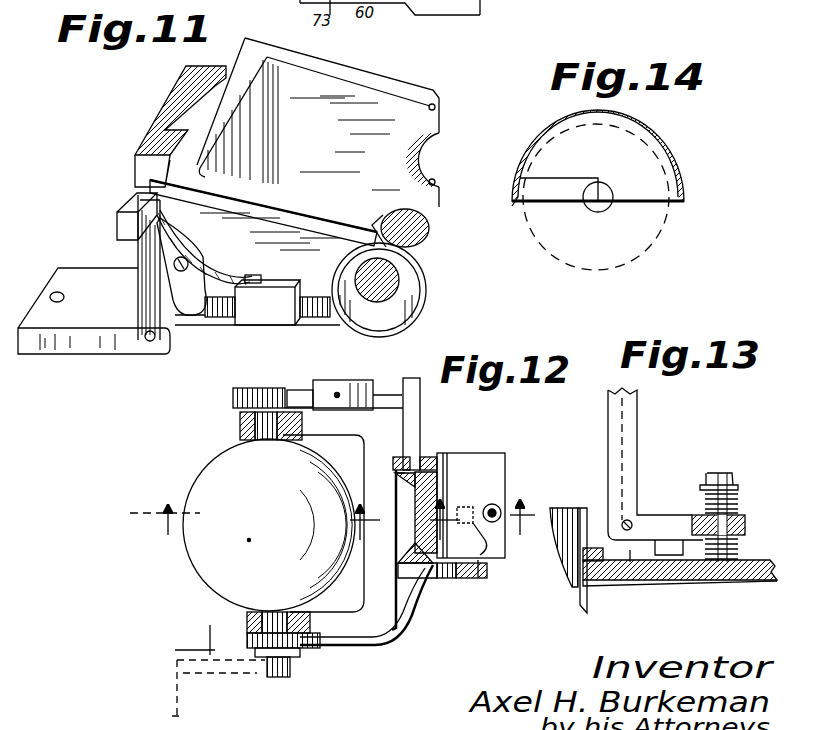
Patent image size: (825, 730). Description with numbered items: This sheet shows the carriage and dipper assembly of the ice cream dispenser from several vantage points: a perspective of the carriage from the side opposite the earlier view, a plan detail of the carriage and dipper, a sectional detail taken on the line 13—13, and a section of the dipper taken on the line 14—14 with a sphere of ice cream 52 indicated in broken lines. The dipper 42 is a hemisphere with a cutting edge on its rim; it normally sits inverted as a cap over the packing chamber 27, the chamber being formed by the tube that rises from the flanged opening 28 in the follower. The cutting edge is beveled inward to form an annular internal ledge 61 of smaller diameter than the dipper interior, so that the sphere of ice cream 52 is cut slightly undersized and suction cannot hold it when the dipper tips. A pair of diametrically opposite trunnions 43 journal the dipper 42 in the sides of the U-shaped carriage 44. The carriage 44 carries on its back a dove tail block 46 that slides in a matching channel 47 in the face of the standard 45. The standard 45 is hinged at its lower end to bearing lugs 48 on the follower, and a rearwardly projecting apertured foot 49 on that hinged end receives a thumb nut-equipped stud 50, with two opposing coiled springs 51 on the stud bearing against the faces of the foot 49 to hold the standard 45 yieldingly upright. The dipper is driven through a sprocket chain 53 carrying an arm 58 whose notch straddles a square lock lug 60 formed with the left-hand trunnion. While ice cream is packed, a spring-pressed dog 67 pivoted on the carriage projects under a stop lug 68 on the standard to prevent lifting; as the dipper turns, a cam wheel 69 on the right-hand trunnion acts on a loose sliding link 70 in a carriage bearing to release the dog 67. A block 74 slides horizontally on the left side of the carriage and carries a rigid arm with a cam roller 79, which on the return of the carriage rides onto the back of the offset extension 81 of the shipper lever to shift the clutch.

In FIG. 12, the section line 13— 13 is at (471, 519).
In FIG. 12, the section line 14— 14 is at (252, 518).
In FIG. 13, the packing chamber 27 is at (572, 556).
In FIG. 13, the flanged opening 28 is at (578, 592).
In FIG. 14, the dipper 42 is at (666, 142).
In FIG. 12, the dipper 42 is at (218, 478).
In FIG. 11, the trunnions 43 is at (422, 228).
In FIG. 12, the trunnions 43 is at (258, 425).
In FIG. 11, the carriage 44 is at (345, 78).
In FIG. 12, the carriage 44 is at (352, 618).
In FIG. 11, the standard 45 is at (140, 146).
In FIG. 12, the standard 45 is at (440, 583).
In FIG. 13, the standard 45 is at (634, 465).
In FIG. 11, the dove tail block 46 is at (196, 100).
In FIG. 12, the dove tail block 46 is at (428, 478).
In FIG. 11, the channel 47 is at (252, 118).
In FIG. 12, the channel 47 is at (398, 557).
In FIG. 13, the channel 47 is at (616, 440).
In FIG. 12, the bearing lugs 48 is at (470, 490).
In FIG. 13, the bearing lugs 48 is at (622, 587).
In FIG. 11, the foot 49 is at (85, 345).
In FIG. 12, the foot 49 is at (455, 470).
In FIG. 13, the foot 49 is at (655, 533).
In FIG. 12, the stud 50 is at (500, 502).
In FIG. 13, the stud 50 is at (737, 518).
In FIG. 13, the coiled springs 51 is at (735, 492).
In FIG. 14, the sphere of ice cream 52 is at (670, 222).
In FIG. 12, the sprocket chain 53 is at (172, 716).
In FIG. 12, the arm 58 is at (231, 696).
In FIG. 12, the lock lug 60 is at (280, 680).
In FIG. 14, the annular internal ledge 61 is at (546, 178).
In FIG. 11, the dog 67 is at (170, 250).
In FIG. 11, the stop lug 68 is at (118, 222).
In FIG. 12, the stop lug 68 is at (420, 422).
In FIG. 11, the cam wheel 69 is at (418, 285).
In FIG. 12, the cam wheel 69 is at (255, 392).
In FIG. 11, the sliding link 70 is at (315, 297).
In FIG. 12, the sliding link 70 is at (302, 396).
In FIG. 12, the block 74 is at (345, 650).
In FIG. 12, the cam roller 79 is at (475, 580).
In FIG. 12, the offset extension 81 is at (470, 580).